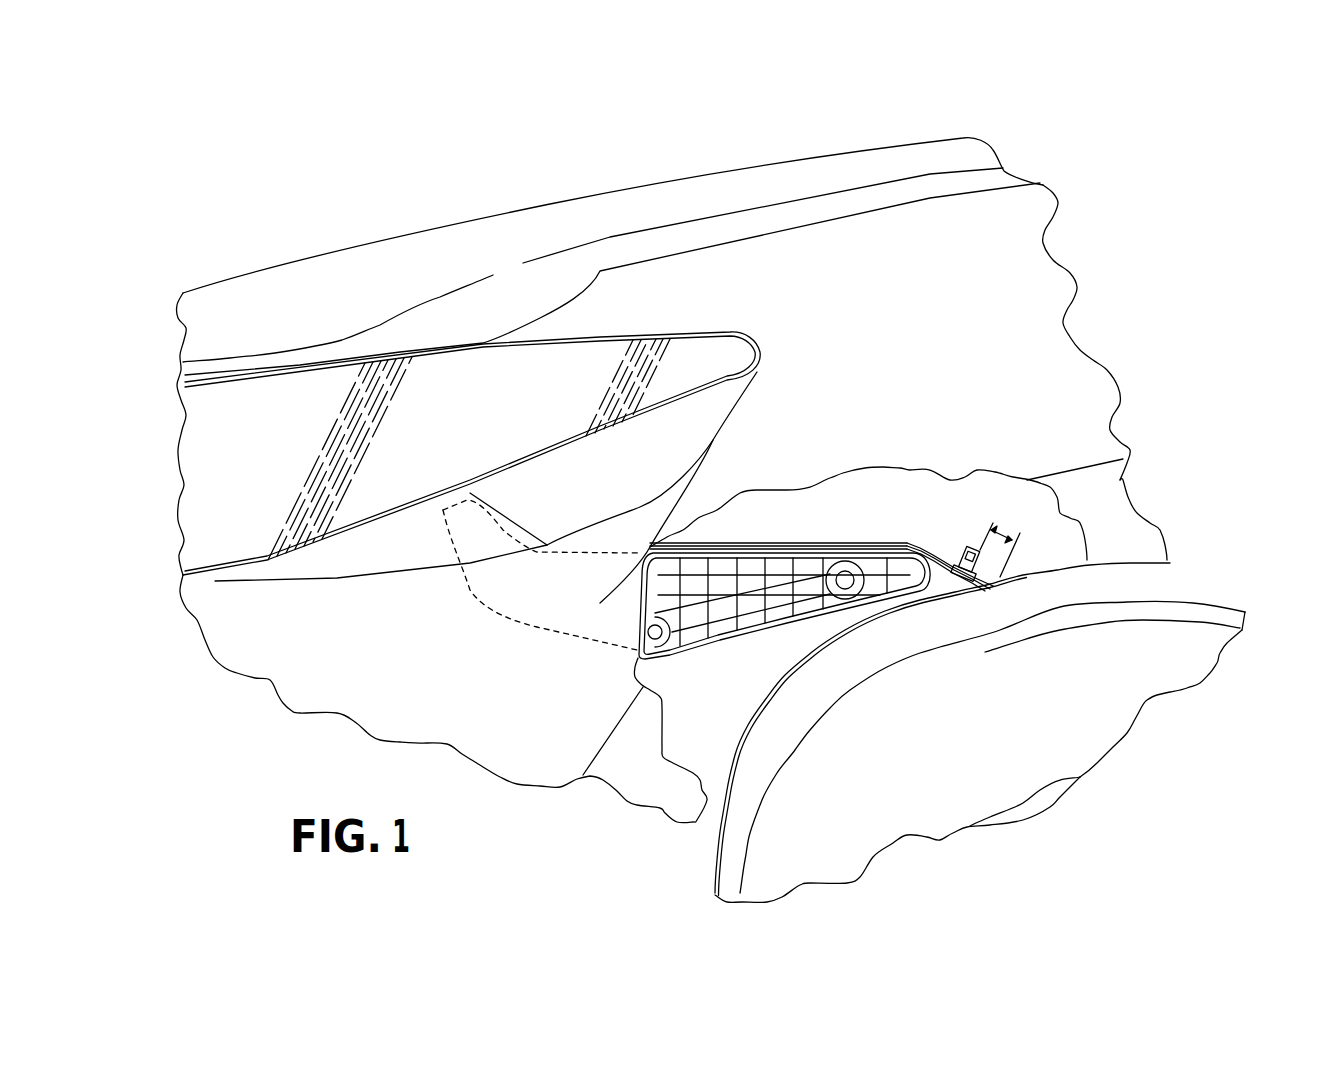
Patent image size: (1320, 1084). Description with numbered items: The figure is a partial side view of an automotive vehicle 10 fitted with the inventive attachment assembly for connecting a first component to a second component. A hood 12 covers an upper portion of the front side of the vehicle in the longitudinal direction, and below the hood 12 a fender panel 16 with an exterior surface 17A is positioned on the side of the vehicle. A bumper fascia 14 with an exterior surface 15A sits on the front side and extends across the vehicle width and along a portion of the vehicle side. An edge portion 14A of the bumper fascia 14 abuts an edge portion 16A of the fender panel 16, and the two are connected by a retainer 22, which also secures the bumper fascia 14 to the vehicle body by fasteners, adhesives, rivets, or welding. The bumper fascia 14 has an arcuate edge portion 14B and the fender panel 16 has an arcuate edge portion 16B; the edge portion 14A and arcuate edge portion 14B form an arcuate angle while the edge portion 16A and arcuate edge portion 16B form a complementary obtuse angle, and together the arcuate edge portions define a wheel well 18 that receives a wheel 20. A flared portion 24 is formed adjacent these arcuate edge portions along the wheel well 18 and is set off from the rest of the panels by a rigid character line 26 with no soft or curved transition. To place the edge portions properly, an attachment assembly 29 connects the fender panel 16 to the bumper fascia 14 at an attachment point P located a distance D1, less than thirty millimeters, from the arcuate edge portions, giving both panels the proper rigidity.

The automotive vehicle 10 is at (1063, 142).
The hood 12 is at (585, 198).
The bumper fascia 14 is at (298, 688).
The edge portion 14A is at (648, 587).
The arcuate edge portion 14B is at (735, 750).
The exterior surface 15A is at (431, 660).
The fender panel 16 is at (1063, 357).
The edge portion 16A is at (697, 543).
The arcuate edge portion 16B is at (1053, 565).
The exterior surface 17A is at (936, 323).
The wheel well 18 is at (1157, 583).
The wheel 20 is at (1220, 613).
The retainer 22 is at (740, 560).
The flared portion 24 is at (1138, 512).
The character line 26 is at (1115, 458).
The attachment assembly 29 is at (960, 522).
The distance D1 is at (993, 522).
The attachment point P is at (966, 582).